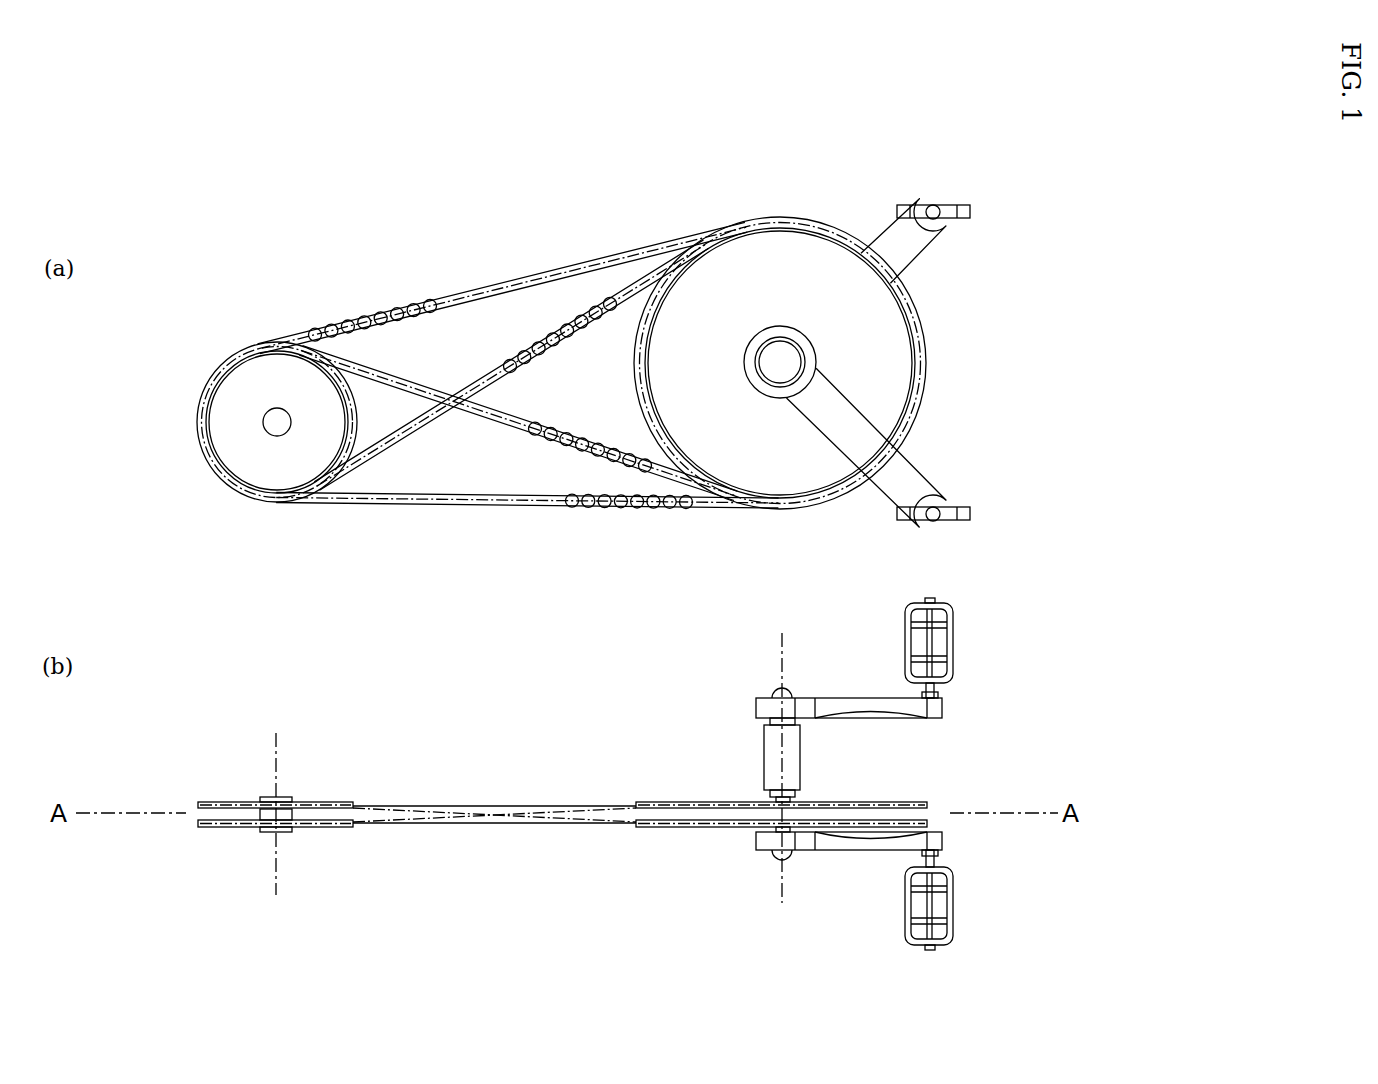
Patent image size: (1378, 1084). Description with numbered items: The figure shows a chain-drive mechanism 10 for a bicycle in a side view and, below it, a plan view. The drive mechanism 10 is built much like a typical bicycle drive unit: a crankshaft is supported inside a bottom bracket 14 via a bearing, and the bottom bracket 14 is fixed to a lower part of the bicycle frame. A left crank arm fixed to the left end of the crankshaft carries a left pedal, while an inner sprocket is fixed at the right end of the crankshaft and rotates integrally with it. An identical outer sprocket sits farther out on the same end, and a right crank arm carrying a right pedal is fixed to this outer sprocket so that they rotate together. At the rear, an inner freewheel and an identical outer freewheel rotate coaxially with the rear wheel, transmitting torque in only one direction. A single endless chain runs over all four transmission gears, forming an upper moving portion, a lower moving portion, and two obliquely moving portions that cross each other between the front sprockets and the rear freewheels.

The drive mechanism 10 is at (1122, 232).
The bottom bracket 14 is at (770, 752).